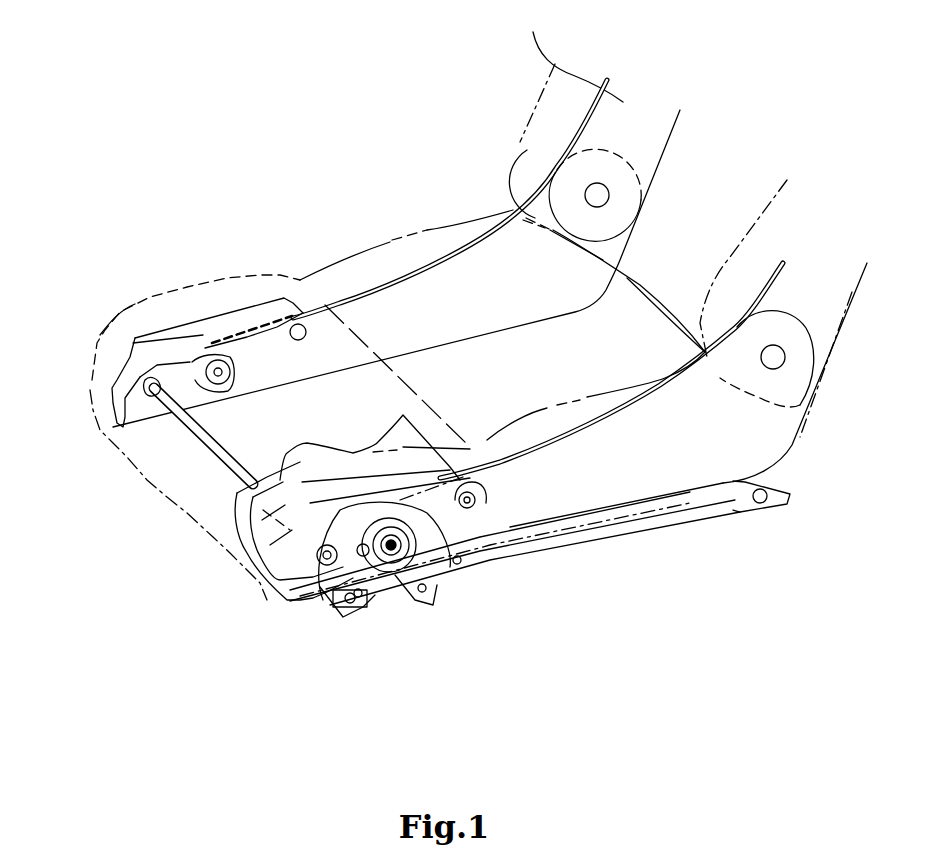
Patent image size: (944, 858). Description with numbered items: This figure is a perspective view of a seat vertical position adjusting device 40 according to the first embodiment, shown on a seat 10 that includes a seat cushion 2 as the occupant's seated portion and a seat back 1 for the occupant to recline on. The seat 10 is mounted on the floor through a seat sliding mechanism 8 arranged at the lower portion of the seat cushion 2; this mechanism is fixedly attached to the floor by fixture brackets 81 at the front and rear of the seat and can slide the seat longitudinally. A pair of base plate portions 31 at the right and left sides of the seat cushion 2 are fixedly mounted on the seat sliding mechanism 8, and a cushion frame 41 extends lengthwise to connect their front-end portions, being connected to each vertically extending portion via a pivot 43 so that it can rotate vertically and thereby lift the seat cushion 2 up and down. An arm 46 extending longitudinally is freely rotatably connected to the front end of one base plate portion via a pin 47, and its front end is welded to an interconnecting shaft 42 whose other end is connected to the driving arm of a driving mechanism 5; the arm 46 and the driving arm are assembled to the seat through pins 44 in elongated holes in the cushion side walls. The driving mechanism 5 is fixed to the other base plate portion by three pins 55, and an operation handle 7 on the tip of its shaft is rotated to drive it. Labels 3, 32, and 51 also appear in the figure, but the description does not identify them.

The seat back 1 is at (558, 117).
The seat cushion 2 is at (242, 282).
The seat back side frame 3 is at (530, 156).
The driving mechanism 5 is at (273, 590).
The operation handle 7 is at (410, 600).
The seat sliding mechanism 8 is at (686, 524).
The seat 10 is at (398, 126).
The base plate portions 31 is at (403, 290).
The seat back pad 32 is at (570, 51).
The seat vertical position adjusting device 40 is at (183, 472).
The cushion frame 41 is at (163, 335).
The interconnecting shaft 42 is at (223, 487).
The pivot 43 is at (300, 322).
The pins 44 is at (338, 567).
The arm 46 is at (133, 331).
The pin 47 is at (210, 338).
The leg bracket 51 is at (337, 603).
The pins 55 is at (360, 597).
The fixture brackets 81 is at (773, 504).